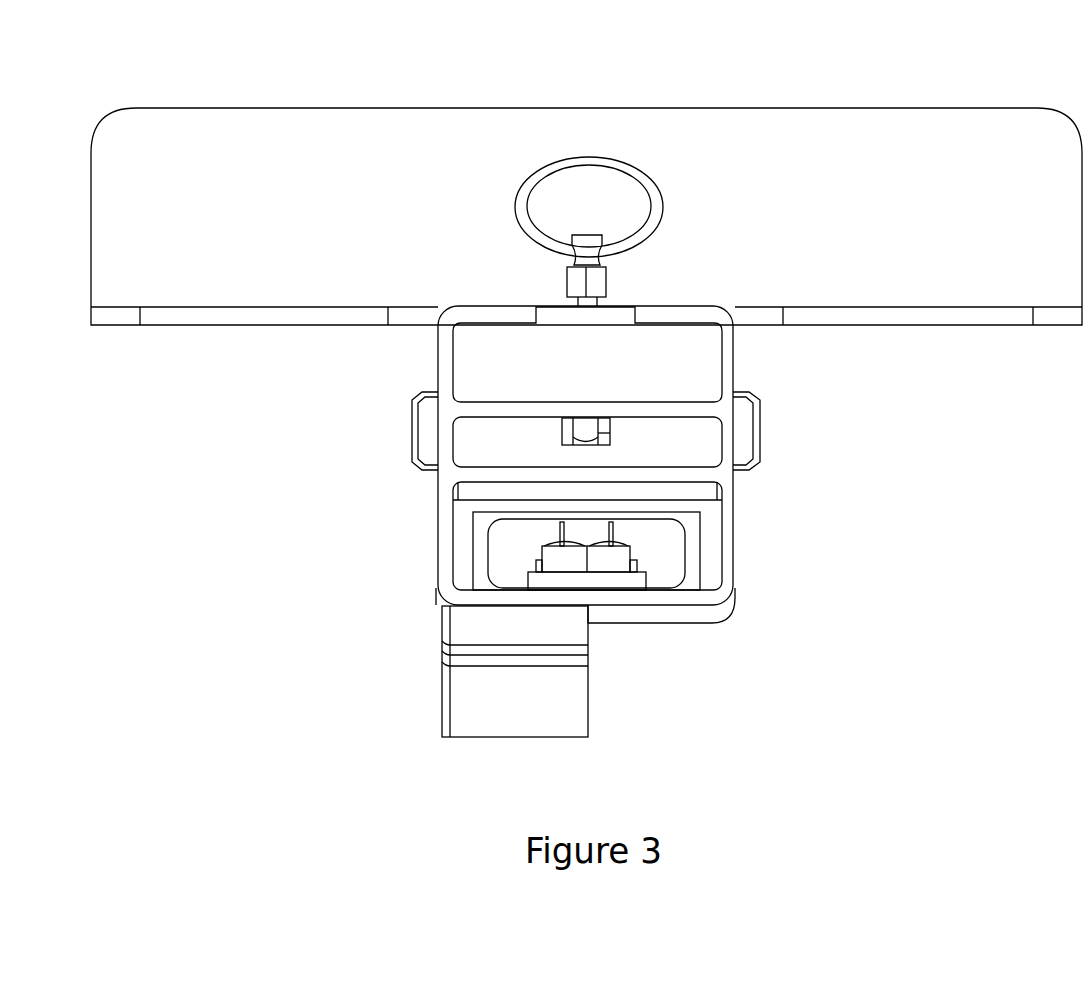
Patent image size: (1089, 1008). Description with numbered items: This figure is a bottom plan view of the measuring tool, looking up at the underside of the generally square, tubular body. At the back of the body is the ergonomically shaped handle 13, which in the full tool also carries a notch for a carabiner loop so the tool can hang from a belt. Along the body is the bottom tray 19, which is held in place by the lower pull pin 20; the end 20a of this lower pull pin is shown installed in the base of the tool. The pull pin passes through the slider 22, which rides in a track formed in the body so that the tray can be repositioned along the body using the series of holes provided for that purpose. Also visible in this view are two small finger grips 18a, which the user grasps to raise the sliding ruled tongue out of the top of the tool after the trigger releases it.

The bottom tray 19 is at (157, 140).
The pull pin 20 is at (515, 208).
The end of pull pin 20a is at (570, 434).
The finger grips 18a is at (410, 420).
The slider 22 is at (635, 560).
The handle 13 is at (475, 663).